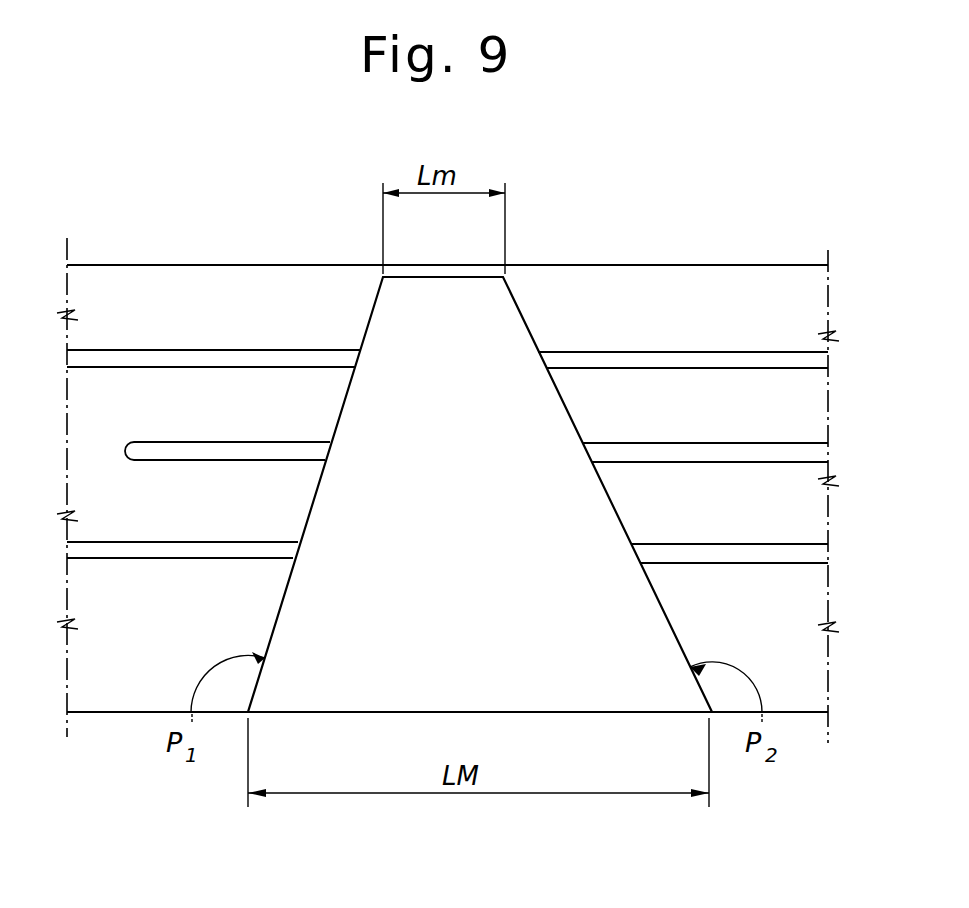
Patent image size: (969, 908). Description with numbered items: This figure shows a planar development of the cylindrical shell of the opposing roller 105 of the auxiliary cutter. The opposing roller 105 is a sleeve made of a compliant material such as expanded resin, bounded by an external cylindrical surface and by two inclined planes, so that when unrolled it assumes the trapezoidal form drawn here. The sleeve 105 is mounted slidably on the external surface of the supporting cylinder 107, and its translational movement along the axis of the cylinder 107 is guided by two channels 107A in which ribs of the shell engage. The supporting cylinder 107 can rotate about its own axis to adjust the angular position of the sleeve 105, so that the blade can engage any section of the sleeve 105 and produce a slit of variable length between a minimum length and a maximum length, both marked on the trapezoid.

The opposing roller 105 is at (357, 413).
The supporting cylinder 107 is at (808, 298).
The channels 107A is at (859, 570).